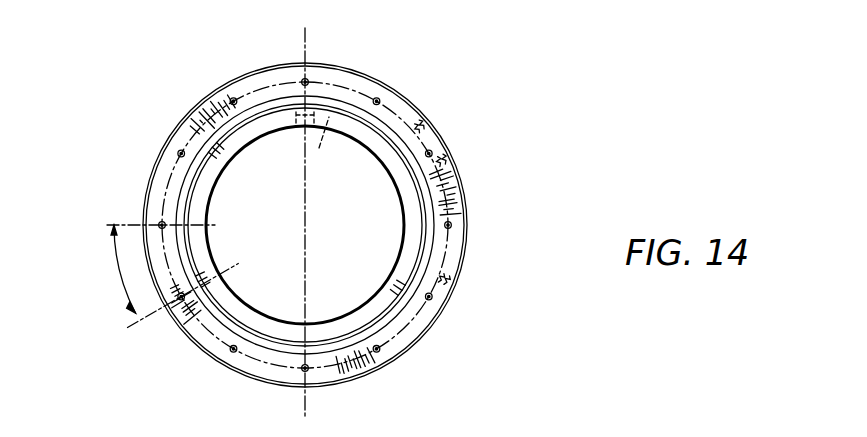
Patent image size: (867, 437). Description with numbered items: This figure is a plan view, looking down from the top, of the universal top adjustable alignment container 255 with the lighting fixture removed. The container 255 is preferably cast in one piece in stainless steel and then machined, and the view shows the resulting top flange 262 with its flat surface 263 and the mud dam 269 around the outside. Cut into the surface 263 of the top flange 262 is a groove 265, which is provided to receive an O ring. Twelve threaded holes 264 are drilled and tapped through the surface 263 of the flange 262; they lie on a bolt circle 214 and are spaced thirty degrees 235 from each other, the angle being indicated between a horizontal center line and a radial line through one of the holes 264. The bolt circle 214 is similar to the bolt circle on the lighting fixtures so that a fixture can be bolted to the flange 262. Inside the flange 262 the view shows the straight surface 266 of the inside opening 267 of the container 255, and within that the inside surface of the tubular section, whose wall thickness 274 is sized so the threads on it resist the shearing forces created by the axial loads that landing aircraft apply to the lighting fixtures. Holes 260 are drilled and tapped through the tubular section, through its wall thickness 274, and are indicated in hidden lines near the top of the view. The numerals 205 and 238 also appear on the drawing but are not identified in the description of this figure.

The housing 205 is at (385, 436).
The bolt circle 214 is at (192, 140).
The thirty degrees 235 is at (122, 284).
The center line 238 is at (132, 224).
The universal top adjustable alignment container 255 is at (467, 67).
The holes 260 is at (318, 155).
The top flange 262 is at (445, 153).
The flat surface 263 is at (446, 284).
The threaded holes 264 is at (427, 300).
The groove 265 is at (453, 283).
The straight surface 266 is at (387, 288).
The opening 267 is at (265, 217).
The mud dam 269 is at (467, 217).
The wall thickness 274 is at (401, 260).